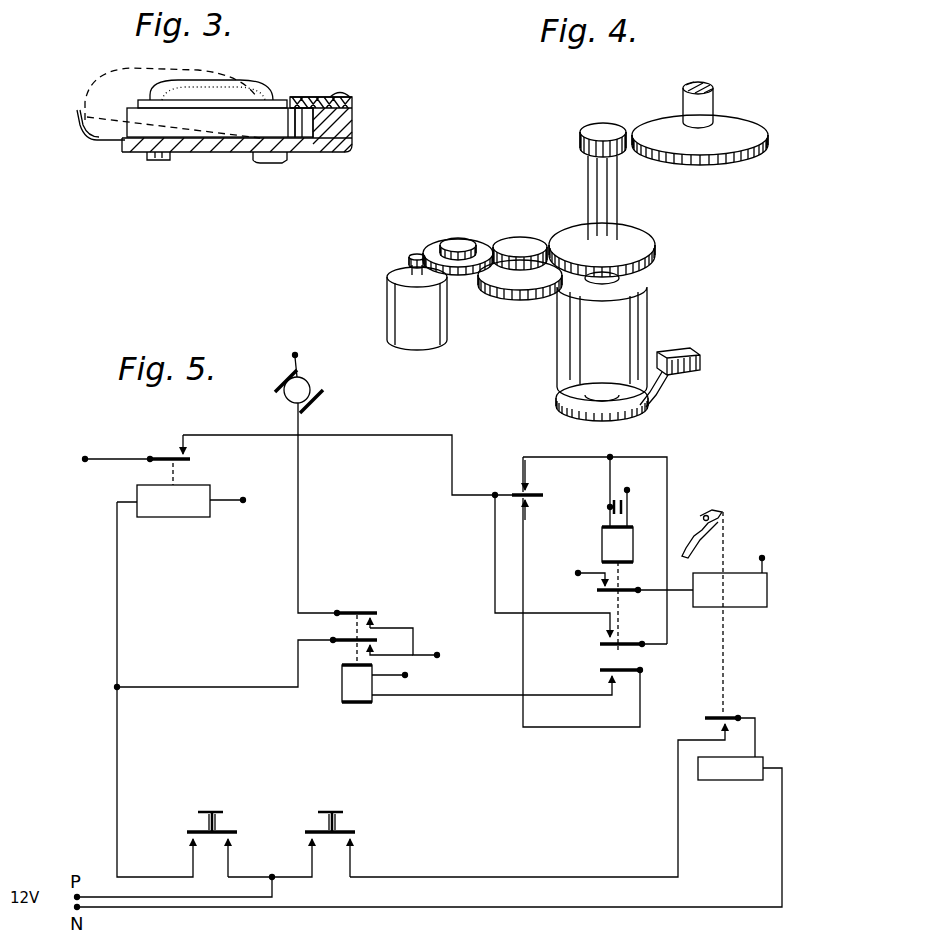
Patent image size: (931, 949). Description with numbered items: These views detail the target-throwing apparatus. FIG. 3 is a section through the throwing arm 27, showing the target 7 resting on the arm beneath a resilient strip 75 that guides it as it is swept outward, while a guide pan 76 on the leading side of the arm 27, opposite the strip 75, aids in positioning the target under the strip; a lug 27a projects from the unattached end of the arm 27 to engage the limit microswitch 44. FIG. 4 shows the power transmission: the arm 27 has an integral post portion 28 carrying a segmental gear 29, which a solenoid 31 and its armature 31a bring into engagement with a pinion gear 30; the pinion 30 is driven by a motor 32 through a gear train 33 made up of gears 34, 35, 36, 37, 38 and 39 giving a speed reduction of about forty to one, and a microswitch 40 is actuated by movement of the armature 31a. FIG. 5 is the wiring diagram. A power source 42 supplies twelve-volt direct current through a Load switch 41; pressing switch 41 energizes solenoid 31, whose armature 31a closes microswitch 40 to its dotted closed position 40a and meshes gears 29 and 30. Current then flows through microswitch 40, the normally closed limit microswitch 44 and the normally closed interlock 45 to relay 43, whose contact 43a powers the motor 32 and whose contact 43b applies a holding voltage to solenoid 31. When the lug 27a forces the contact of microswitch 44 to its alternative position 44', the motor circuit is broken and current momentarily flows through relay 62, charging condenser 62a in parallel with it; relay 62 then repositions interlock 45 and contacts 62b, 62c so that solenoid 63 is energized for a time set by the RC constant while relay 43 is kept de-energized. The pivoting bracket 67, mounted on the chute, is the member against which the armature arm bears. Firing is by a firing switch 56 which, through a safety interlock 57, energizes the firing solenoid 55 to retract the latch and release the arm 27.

In FIG. 3, the film cartridge 7 is at (212, 128).
In FIG. 3, the throwing arm 27 is at (362, 110).
In FIG. 3, the lug 27a is at (272, 165).
In FIG. 3, the resilient strip 75 is at (348, 97).
In FIG. 3, the guide pan 76 is at (90, 142).
In FIG. 4, the post portion 28 is at (708, 108).
In FIG. 4, the segmental gear 29 is at (748, 120).
In FIG. 4, the pinion gear 30 is at (600, 130).
In FIG. 4, the solenoid 31 is at (640, 330).
In FIG. 5, the solenoid 31 is at (196, 508).
In FIG. 4, the armature 31a is at (612, 210).
In FIG. 5, the armature 31a is at (175, 478).
In FIG. 4, the motor 32 is at (440, 325).
In FIG. 5, the motor 32 is at (305, 388).
In FIG. 4, the gear train 33 is at (489, 232).
In FIG. 4, the gear 34 is at (414, 252).
In FIG. 4, the gear 35 is at (445, 240).
In FIG. 4, the gear 36 is at (472, 238).
In FIG. 4, the gear 37 is at (515, 285).
In FIG. 4, the gear 38 is at (527, 244).
In FIG. 4, the gear 39 is at (565, 235).
In FIG. 4, the microswitch 40 is at (690, 358).
In FIG. 5, the microswitch 40 is at (168, 452).
In FIG. 5, the closed position of microswitch 40a is at (190, 455).
In FIG. 5, the Load switch 41 is at (188, 830).
In FIG. 5, the power source 42 is at (70, 890).
In FIG. 5, the relay 43 is at (352, 680).
In FIG. 5, the relay contact 43a is at (363, 608).
In FIG. 5, the relay contact 43b is at (340, 645).
In FIG. 5, the limit microswitch 44 is at (534, 498).
In FIG. 5, the alternative position of microswitch contact 44' is at (548, 472).
In FIG. 5, the interlock 45 is at (637, 675).
In FIG. 5, the firing solenoid 55 is at (714, 770).
In FIG. 5, the firing switch 56 is at (350, 828).
In FIG. 5, the safety interlock 57 is at (712, 705).
In FIG. 5, the relay 62 is at (608, 538).
In FIG. 5, the condenser 62a is at (605, 503).
In FIG. 5, the relay contact 62b is at (643, 648).
In FIG. 5, the relay contact 62c is at (600, 593).
In FIG. 5, the solenoid 63 is at (752, 607).
In FIG. 5, the pivoting bracket 67 is at (720, 510).